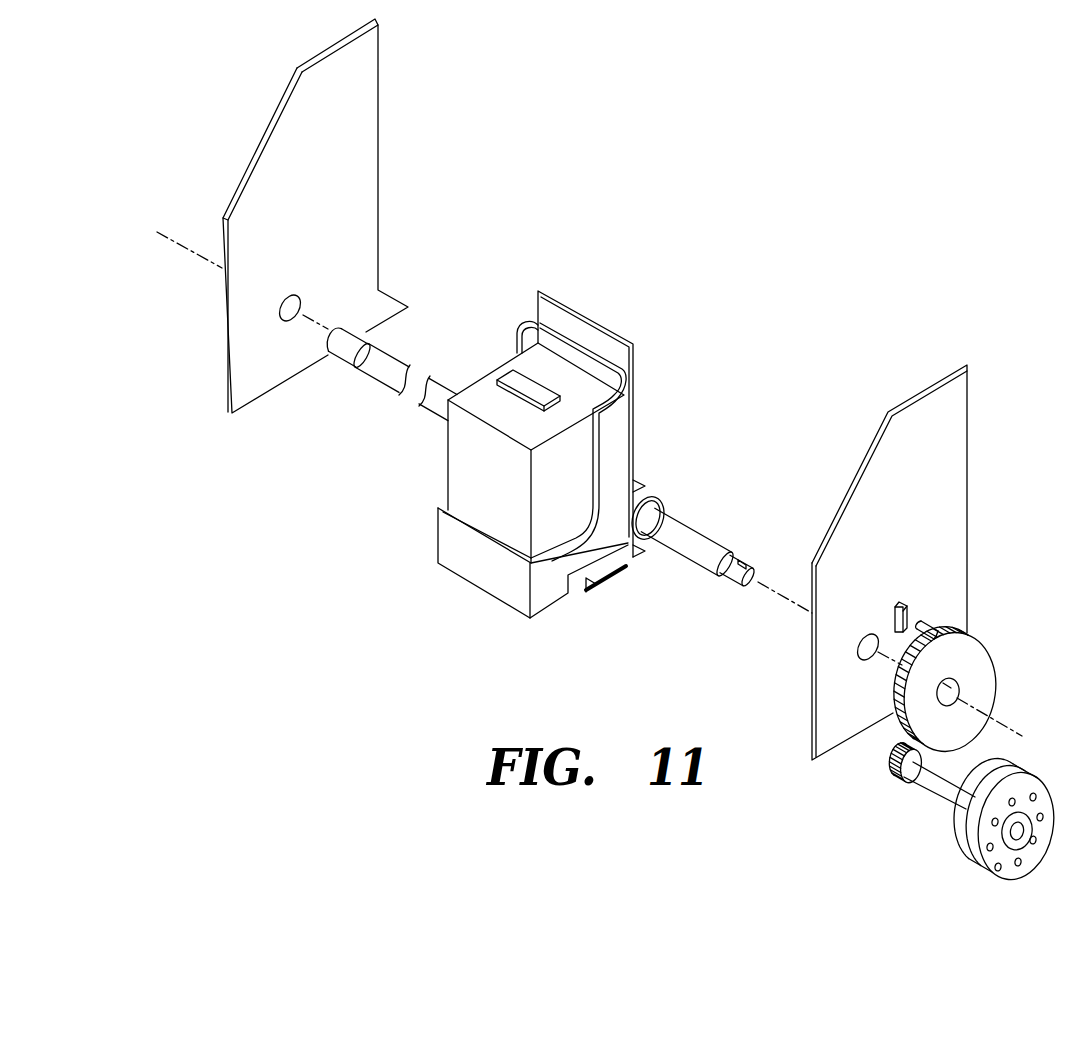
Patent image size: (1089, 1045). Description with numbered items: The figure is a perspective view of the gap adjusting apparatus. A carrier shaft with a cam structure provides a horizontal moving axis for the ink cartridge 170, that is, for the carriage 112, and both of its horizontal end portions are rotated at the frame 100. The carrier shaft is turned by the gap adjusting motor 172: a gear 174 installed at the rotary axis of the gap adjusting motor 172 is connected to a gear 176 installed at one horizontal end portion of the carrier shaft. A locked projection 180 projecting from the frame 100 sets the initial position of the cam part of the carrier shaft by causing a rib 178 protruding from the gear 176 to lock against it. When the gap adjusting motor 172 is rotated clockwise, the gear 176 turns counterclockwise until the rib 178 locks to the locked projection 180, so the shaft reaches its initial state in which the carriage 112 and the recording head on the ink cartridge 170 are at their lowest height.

The frame 100 is at (232, 330).
The ink cartridge 170 is at (477, 388).
The carriage 112 is at (491, 582).
The locked projection 180 is at (911, 606).
The rib 178 is at (931, 628).
The gear 176 is at (987, 657).
The gear 174 is at (907, 783).
The gap adjusting motor 172 is at (1020, 775).